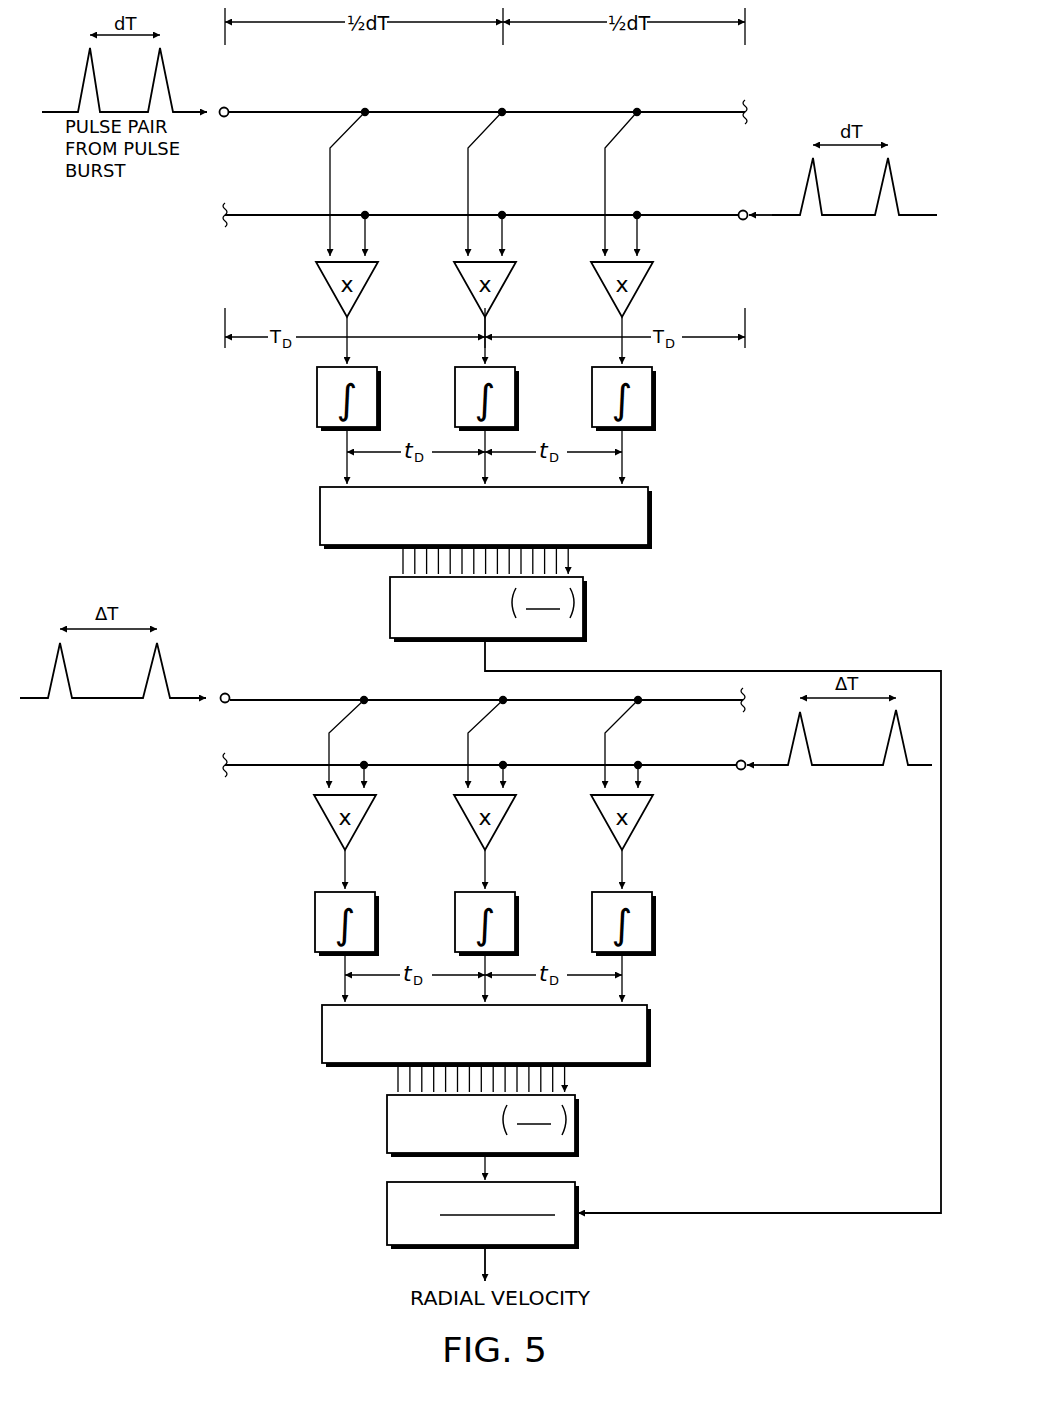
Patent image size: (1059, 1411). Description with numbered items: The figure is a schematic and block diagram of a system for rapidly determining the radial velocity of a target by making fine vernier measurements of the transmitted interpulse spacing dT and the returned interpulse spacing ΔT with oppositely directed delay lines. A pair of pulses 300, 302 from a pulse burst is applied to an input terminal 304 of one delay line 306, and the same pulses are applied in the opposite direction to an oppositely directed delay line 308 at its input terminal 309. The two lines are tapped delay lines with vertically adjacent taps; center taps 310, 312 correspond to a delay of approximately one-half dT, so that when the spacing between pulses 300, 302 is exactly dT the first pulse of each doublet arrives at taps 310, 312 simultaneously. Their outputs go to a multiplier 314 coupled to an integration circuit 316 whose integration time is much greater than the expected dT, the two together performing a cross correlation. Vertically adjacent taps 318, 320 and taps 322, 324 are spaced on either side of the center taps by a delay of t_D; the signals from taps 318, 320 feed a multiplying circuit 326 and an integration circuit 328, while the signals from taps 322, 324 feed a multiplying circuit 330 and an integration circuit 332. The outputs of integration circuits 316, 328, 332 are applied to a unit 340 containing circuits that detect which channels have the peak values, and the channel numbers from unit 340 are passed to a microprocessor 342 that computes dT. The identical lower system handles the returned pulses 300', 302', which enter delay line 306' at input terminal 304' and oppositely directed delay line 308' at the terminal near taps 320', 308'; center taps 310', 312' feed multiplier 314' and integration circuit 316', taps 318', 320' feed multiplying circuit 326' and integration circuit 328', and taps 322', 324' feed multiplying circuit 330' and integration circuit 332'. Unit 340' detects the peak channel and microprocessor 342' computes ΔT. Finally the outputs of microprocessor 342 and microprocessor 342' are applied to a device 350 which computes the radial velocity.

The pulse 300 is at (528, 131).
The pulse 302 is at (490, 131).
The input terminal 304 is at (247, 99).
The delay line 306 is at (488, 94).
The oppositely directed delay line 308 is at (481, 206).
The input terminal 309 is at (744, 221).
The tap 310 is at (500, 168).
The tap 312 is at (520, 219).
The multiplier 314 is at (508, 282).
The integration circuit 316 is at (510, 399).
The tap 318 is at (640, 168).
The tap 320 is at (656, 219).
The tap 322 is at (369, 168).
The tap 324 is at (385, 219).
The multiplying circuit 326 is at (645, 282).
The integration circuit 328 is at (647, 399).
The multiplying circuit 330 is at (370, 282).
The integration circuit 332 is at (371, 399).
The unit 340 is at (511, 518).
The microprocessor 342 is at (516, 609).
The pulse 300' is at (478, 704).
The pulse 302' is at (483, 704).
The input terminal 304' is at (250, 686).
The delay line 306' is at (487, 692).
The oppositely directed delay line 308' is at (482, 757).
The tap 310' is at (510, 730).
The tap 312' is at (526, 762).
The multiplier 314' is at (509, 822).
The integration circuit 316' is at (513, 924).
The tap 318' is at (643, 730).
The tap 320' is at (661, 762).
The tap 322' is at (369, 730).
The tap 324' is at (387, 762).
The multiplying circuit 326' is at (646, 822).
The integration circuit 328' is at (650, 924).
The multiplying circuit 330' is at (369, 822).
The integration circuit 332' is at (373, 924).
The unit 340' is at (514, 1036).
The microprocessor 342' is at (516, 1126).
The device 350 is at (580, 1206).